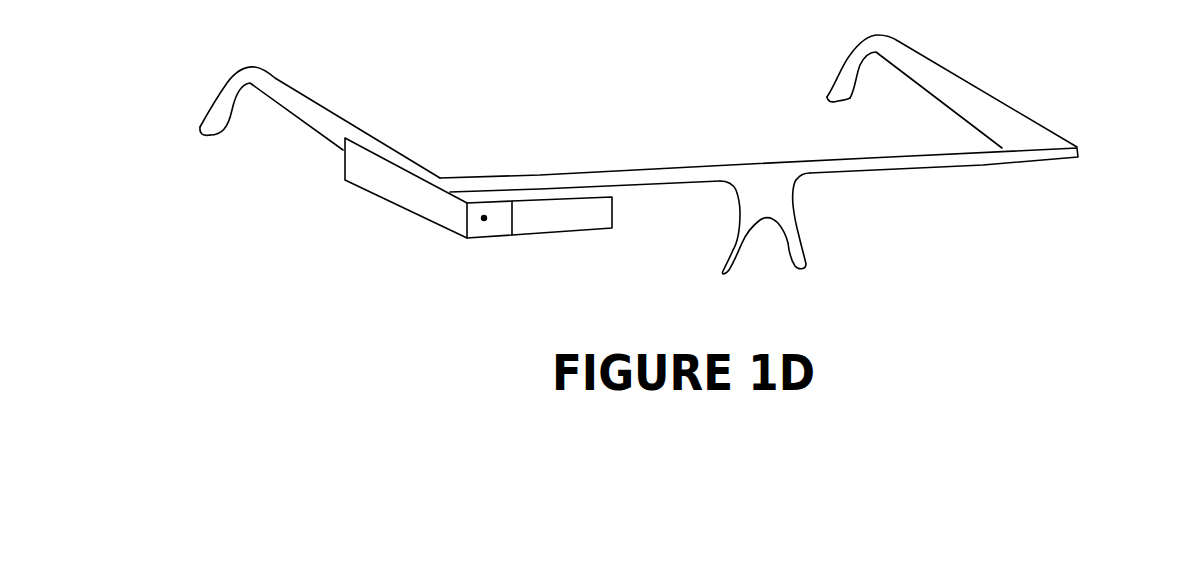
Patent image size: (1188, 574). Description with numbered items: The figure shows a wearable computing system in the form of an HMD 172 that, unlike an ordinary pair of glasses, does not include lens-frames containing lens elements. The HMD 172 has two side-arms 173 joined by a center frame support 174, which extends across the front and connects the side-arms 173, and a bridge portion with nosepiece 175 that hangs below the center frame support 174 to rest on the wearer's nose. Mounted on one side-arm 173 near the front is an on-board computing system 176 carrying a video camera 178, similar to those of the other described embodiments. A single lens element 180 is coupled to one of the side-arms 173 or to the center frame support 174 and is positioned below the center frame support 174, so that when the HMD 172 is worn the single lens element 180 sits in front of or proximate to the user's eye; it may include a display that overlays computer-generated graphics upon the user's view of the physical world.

The HMD 172 is at (1080, 214).
The side-arms 173 is at (308, 109).
The center frame support 174 is at (658, 172).
The bridge portion with nosepiece 175 is at (788, 217).
The on-board computing system 176 is at (383, 198).
The video camera 178 is at (483, 221).
The single lens element 180 is at (567, 235).